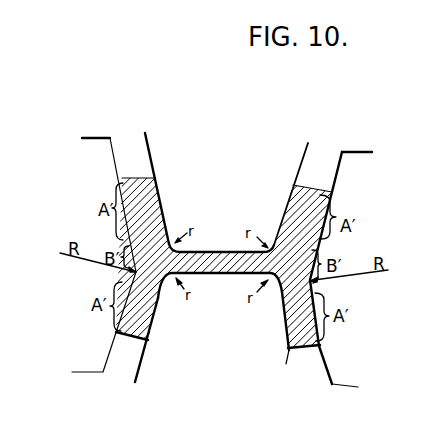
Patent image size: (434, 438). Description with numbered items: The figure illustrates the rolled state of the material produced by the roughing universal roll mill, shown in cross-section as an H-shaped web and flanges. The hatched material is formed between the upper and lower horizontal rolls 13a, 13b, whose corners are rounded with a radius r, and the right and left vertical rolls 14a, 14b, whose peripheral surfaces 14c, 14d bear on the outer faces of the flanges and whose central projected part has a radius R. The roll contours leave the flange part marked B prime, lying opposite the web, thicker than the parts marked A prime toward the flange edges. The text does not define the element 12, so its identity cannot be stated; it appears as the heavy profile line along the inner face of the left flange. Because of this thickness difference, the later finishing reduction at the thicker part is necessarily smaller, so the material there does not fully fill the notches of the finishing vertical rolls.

The inner surface of upper left leg 12 is at (141, 176).
The upper horizontal roll 13a is at (299, 171).
The lower horizontal roll 13b is at (287, 356).
The right vertical roll 14a is at (94, 149).
The left vertical roll 14b is at (362, 166).
The peripheral surface of vertical roll 14c is at (118, 158).
The peripheral surface of vertical roll 14d is at (337, 168).